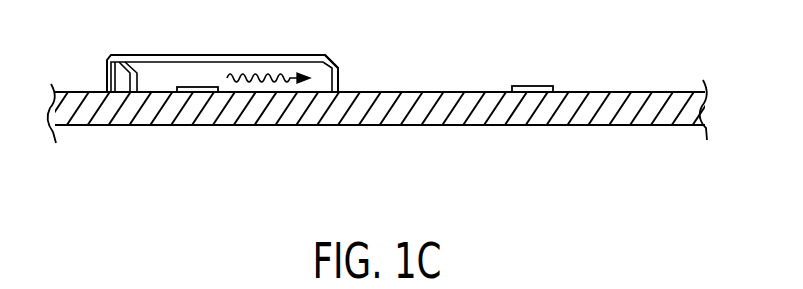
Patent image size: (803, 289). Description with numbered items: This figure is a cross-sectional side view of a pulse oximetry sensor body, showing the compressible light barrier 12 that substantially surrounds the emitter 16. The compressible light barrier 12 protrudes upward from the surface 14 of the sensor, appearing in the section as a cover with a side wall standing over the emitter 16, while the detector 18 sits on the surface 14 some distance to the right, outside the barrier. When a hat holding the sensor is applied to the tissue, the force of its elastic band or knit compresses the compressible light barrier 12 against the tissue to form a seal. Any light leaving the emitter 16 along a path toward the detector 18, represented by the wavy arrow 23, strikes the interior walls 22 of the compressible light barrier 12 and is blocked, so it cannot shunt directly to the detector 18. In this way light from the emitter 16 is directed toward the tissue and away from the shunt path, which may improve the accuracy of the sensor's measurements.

The compressible light barrier 12 is at (112, 77).
The surface 14 is at (157, 109).
The emitter 16 is at (222, 91).
The detector 18 is at (535, 85).
The interior walls 22 is at (320, 73).
The arrow 23 is at (275, 80).